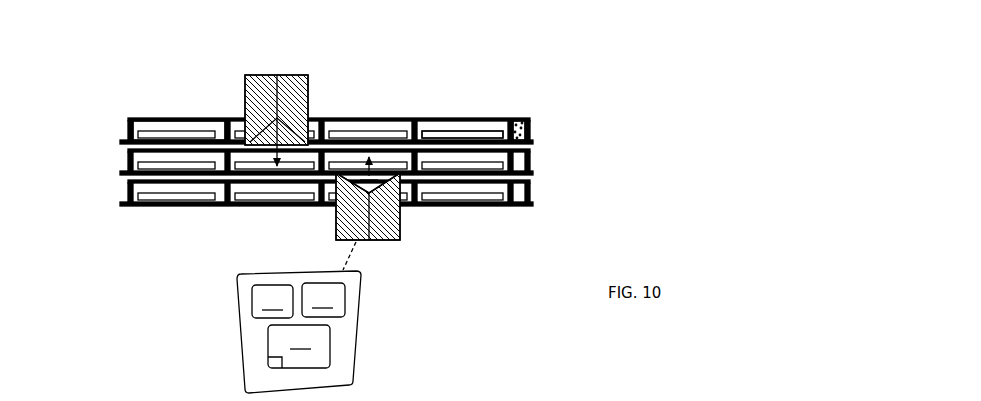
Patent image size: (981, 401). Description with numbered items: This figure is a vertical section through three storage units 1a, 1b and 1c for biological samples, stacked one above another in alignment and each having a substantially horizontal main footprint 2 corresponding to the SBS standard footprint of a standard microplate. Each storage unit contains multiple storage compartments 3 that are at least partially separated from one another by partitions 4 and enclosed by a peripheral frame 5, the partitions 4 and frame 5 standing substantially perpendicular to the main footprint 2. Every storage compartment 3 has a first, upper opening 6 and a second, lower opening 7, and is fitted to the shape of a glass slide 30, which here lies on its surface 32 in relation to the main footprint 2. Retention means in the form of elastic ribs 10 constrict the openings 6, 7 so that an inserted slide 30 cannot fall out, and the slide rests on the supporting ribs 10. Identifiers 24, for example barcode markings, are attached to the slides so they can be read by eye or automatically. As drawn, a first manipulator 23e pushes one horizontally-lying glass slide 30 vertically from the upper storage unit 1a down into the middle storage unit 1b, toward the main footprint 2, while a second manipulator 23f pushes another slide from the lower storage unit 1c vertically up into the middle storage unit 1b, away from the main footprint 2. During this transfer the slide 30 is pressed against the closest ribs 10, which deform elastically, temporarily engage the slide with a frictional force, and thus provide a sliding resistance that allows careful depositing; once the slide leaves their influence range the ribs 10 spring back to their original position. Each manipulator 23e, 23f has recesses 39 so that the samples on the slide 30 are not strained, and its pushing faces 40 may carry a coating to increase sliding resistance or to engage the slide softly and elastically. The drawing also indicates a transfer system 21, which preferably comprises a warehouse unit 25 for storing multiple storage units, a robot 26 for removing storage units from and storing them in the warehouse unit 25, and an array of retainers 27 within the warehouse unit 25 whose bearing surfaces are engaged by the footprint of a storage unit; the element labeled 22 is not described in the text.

The upper storage unit 1a is at (575, 131).
The middle storage unit 1b is at (575, 163).
The lower storage unit 1c is at (575, 192).
The main footprint 2 is at (123, 208).
The storage compartment 3 is at (184, 120).
The partition 4 is at (327, 119).
The peripheral frame 5 is at (518, 126).
The first opening 6 is at (200, 116).
The second opening 7 is at (197, 207).
The ribs 10 is at (500, 168).
The transfer system 21 is at (358, 350).
The control module 22 is at (323, 300).
The first manipulator 23e is at (283, 108).
The second manipulator 23f is at (393, 217).
The identifier 24 is at (531, 120).
The warehouse unit 25 is at (299, 346).
The robot 26 is at (272, 301).
The retainer 27 is at (270, 369).
The glass slide 30 is at (165, 135).
The surface 32 is at (493, 133).
The recess 39 is at (365, 178).
The pushing face 40 is at (302, 150).